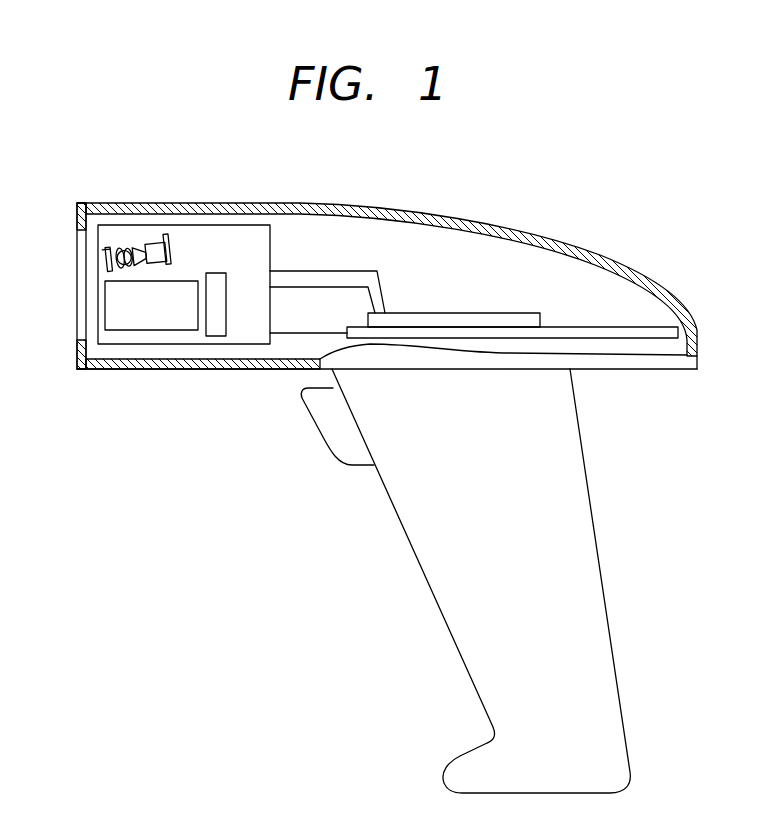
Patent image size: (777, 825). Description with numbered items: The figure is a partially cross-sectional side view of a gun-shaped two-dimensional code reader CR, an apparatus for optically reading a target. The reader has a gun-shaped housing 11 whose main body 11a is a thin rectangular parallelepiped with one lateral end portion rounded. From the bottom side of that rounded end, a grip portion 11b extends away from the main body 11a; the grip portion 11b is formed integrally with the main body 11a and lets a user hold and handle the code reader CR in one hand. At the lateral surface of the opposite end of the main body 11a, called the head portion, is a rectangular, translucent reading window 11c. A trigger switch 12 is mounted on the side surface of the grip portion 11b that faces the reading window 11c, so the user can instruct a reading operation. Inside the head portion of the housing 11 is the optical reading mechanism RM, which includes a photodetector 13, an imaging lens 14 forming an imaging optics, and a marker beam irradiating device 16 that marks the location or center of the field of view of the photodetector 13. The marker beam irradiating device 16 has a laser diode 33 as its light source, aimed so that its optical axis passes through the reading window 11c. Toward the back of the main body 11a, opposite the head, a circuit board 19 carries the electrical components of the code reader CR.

The two-dimensional code reader CR is at (86, 137).
The gun-shaped housing 11 is at (511, 214).
The main body 11a is at (428, 212).
The grip portion 11b is at (589, 492).
The reading window 11c is at (77, 252).
The trigger switch 12 is at (322, 436).
The photodetector 13 is at (218, 337).
The imaging lens 14 is at (157, 331).
The marker beam irradiating device 16 is at (138, 228).
The circuit board 19 is at (612, 327).
The laser diode 33 is at (163, 246).
The reading mechanism RM is at (240, 252).